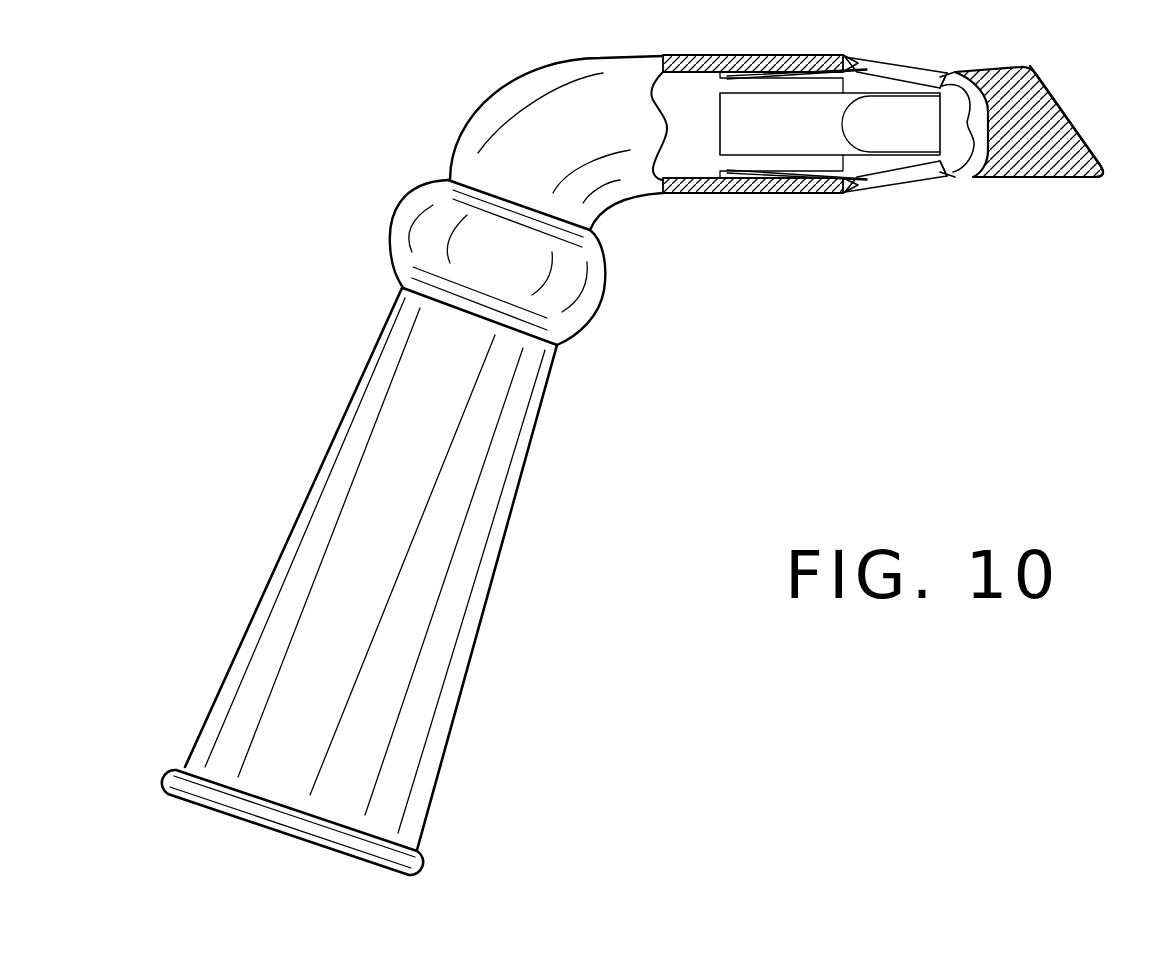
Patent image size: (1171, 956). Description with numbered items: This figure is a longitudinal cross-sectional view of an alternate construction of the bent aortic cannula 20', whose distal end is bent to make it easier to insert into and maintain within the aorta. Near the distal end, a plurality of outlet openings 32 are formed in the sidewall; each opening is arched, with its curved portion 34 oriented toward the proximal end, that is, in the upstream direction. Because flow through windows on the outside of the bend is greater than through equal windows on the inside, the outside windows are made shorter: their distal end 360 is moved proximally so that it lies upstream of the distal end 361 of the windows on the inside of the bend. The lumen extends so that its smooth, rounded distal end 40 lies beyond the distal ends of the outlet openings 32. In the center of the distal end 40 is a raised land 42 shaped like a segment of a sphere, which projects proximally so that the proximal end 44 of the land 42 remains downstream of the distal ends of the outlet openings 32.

The aortic cannula 20' is at (425, 465).
The outlet openings 32 is at (890, 72).
The curved portion 34 is at (853, 58).
The distal end of windows on outside side of bend 360 is at (939, 80).
The distal end of windows on inside side of bend 361 is at (929, 178).
The distal end of the lumen 40 is at (970, 97).
The raised land 42 is at (1010, 123).
The proximal end of the land 44 is at (968, 172).